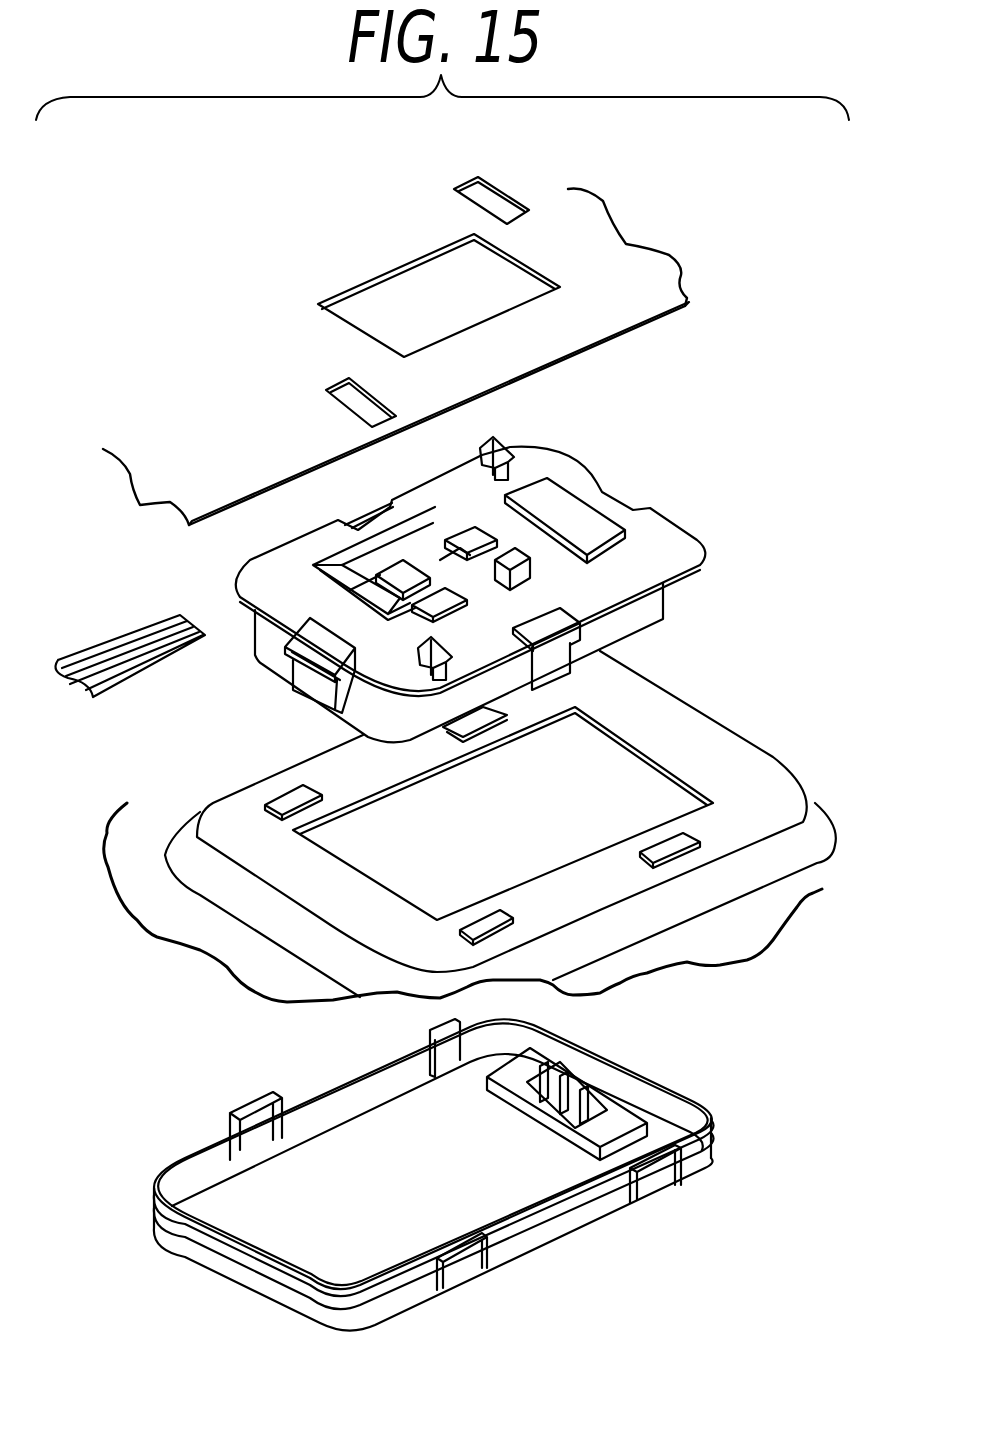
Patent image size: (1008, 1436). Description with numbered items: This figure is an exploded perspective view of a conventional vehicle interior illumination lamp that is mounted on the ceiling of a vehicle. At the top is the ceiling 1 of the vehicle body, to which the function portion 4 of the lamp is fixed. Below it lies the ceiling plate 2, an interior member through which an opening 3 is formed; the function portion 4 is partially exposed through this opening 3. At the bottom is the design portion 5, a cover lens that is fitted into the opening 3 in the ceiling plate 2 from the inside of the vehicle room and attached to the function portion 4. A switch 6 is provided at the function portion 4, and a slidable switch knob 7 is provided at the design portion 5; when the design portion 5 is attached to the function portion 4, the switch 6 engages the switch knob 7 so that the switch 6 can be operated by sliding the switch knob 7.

The ceiling 1 is at (583, 228).
The ceiling plate 2 is at (748, 765).
The opening 3 is at (623, 750).
The function portion 4 is at (491, 581).
The design portion 5 is at (434, 1194).
The switch 6 is at (580, 515).
The switch knob 7 is at (600, 1077).